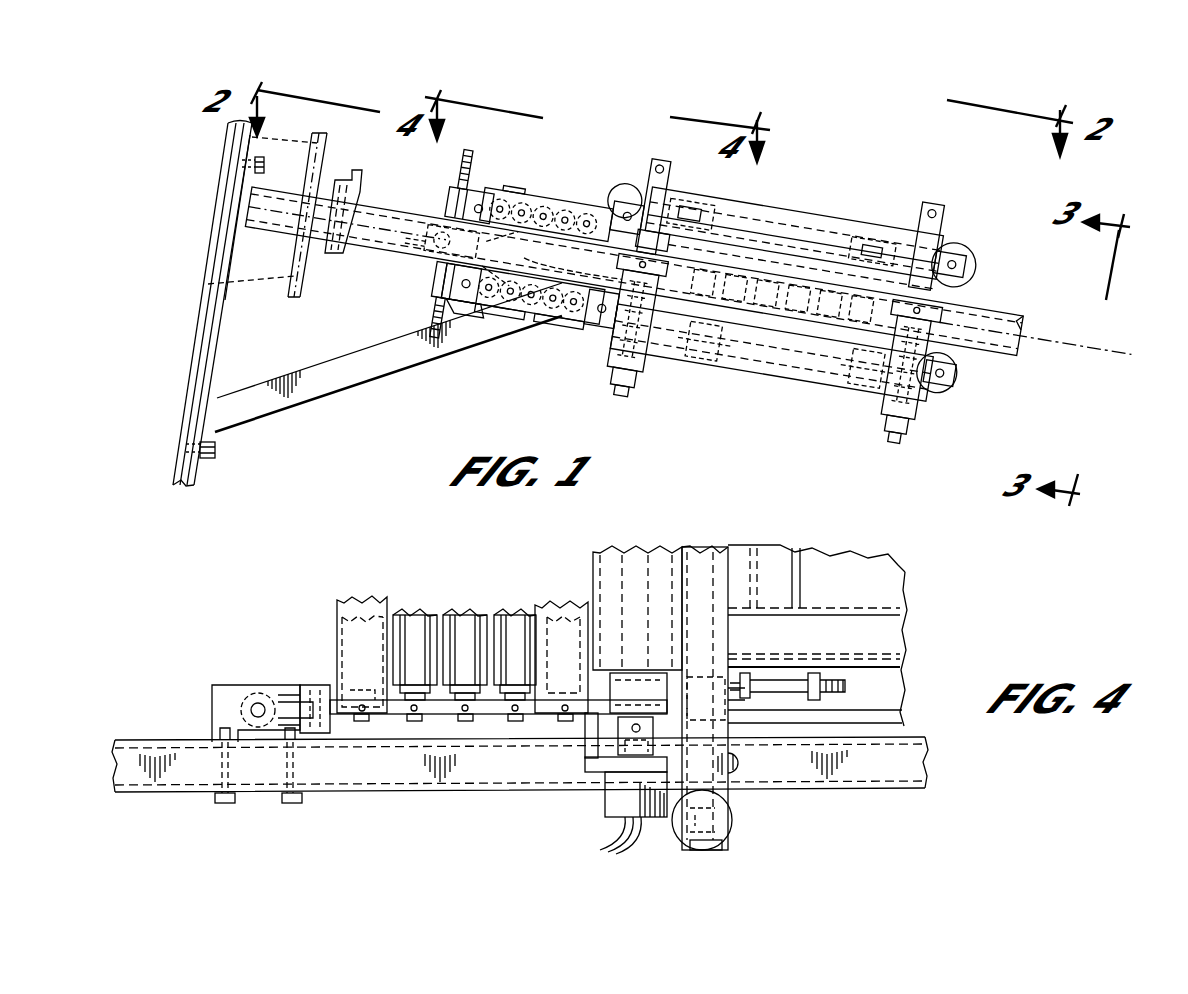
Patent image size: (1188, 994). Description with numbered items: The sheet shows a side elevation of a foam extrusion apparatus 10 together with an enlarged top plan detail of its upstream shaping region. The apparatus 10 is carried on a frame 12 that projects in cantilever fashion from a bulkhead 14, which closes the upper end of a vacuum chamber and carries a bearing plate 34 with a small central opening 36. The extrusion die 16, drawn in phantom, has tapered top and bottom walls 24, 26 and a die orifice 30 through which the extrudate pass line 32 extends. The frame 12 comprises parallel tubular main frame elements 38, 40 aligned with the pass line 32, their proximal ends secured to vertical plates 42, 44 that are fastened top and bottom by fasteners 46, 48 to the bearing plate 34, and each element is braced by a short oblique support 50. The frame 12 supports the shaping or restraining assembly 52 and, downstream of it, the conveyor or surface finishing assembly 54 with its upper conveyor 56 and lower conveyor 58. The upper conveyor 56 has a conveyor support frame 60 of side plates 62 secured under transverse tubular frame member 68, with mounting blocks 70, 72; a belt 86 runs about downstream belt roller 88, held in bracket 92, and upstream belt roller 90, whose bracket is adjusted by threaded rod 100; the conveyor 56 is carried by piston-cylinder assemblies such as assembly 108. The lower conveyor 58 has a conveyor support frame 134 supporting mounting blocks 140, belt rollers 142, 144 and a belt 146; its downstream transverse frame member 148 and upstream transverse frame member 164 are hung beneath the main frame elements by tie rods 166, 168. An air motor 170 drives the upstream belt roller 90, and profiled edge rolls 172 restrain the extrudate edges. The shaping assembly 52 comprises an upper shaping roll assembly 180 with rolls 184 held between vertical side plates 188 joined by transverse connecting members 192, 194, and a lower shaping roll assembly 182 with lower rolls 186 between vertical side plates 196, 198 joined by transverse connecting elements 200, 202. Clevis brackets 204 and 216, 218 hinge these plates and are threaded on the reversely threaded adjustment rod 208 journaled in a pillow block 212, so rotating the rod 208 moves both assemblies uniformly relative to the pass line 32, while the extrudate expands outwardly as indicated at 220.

In FIG. 1, the foam extrusion apparatus 10 is at (203, 187).
In FIG. 1, the frame 12 is at (279, 415).
In FIG. 1, the bulkhead 14 is at (173, 487).
In FIG. 1, the extrusion die 16 is at (355, 262).
In FIG. 1, the top wall 24 is at (352, 200).
In FIG. 1, the bottom wall 26 is at (372, 262).
In FIG. 1, the die orifice 30 is at (518, 250).
In FIG. 1, the extrudate pass line 32 is at (1130, 350).
In FIG. 1, the bearing plate 34 is at (195, 402).
In FIG. 1, the central opening 36 is at (206, 365).
In FIG. 1, the main frame element 38 is at (675, 281).
In FIG. 4, the main frame element 38 is at (382, 780).
In FIG. 1, the main frame element 40 is at (1022, 340).
In FIG. 1, the vertical plate 42 is at (259, 251).
In FIG. 1, the vertical plate 44 is at (220, 368).
In FIG. 1, the fastener 46 is at (266, 162).
In FIG. 1, the fastener 48 is at (216, 452).
In FIG. 1, the oblique support 50 is at (330, 395).
In FIG. 1, the shaping or restraining assembly 52 is at (576, 132).
In FIG. 1, the conveyor or surface finishing assembly 54 is at (817, 172).
In FIG. 1, the upper conveyor 56 is at (990, 262).
In FIG. 1, the lower conveyor 58 is at (978, 372).
In FIG. 1, the conveyor support frame 60 is at (826, 216).
In FIG. 4, the side plate 62 is at (900, 718).
In FIG. 4, the transverse tubular frame member 68 is at (707, 560).
In FIG. 1, the mounting block 70 is at (896, 240).
In FIG. 1, the mounting block 72 is at (710, 215).
In FIG. 4, the mounting block 72 is at (800, 708).
In FIG. 1, the belt 86 is at (952, 255).
In FIG. 1, the downstream belt roller 88 is at (984, 262).
In FIG. 1, the upstream belt roller 90 is at (654, 205).
In FIG. 4, the upstream belt roller 90 is at (612, 558).
In FIG. 1, the bracket 92 is at (976, 276).
In FIG. 4, the threaded rod 100 is at (830, 680).
In FIG. 4, the piston-cylinder assembly 108 is at (735, 830).
In FIG. 1, the conveyor support frame 134 is at (790, 378).
In FIG. 1, the mounting block 140 is at (678, 352).
In FIG. 1, the belt roller 142 is at (960, 384).
In FIG. 1, the belt roller 144 is at (568, 338).
In FIG. 1, the belt 146 is at (938, 396).
In FIG. 1, the downstream transverse frame member 148 is at (890, 428).
In FIG. 1, the upstream transverse frame member 164 is at (640, 366).
In FIG. 1, the tie rod 166 is at (622, 398).
In FIG. 4, the tie rod 166 is at (738, 768).
In FIG. 1, the tie rod 168 is at (622, 395).
In FIG. 4, the air motor 170 is at (618, 806).
In FIG. 1, the profiled edge roll 172 is at (782, 297).
In FIG. 1, the upper shaping roll assembly 180 is at (606, 166).
In FIG. 1, the lower shaping roll assembly 182 is at (536, 372).
In FIG. 1, the rolls 184 is at (540, 200).
In FIG. 4, the rolls 184 is at (460, 624).
In FIG. 1, the lower rolls 186 is at (512, 316).
In FIG. 1, the vertical side plate 188 is at (518, 194).
In FIG. 4, the vertical side plate 188 is at (494, 718).
In FIG. 1, the transverse connecting member 192 is at (600, 210).
In FIG. 4, the transverse connecting member 192 is at (556, 604).
In FIG. 1, the transverse connecting member 194 is at (478, 190).
In FIG. 4, the transverse connecting member 194 is at (352, 607).
In FIG. 1, the vertical side plate 196 is at (471, 342).
In FIG. 1, the vertical side plate 198 is at (500, 335).
In FIG. 4, the vertical side plate 198 is at (660, 685).
In FIG. 1, the transverse connecting element 200 is at (534, 326).
In FIG. 1, the transverse connecting element 202 is at (494, 310).
In FIG. 1, the clevis bracket 204 is at (455, 205).
In FIG. 4, the clevis bracket 204 is at (281, 692).
In FIG. 4, the adjustment rod 208 is at (254, 702).
In FIG. 1, the pillow block 212 is at (429, 236).
In FIG. 4, the pillow block 212 is at (212, 700).
In FIG. 1, the clevis bracket 216 is at (411, 302).
In FIG. 1, the clevis bracket 218 is at (438, 283).
In FIG. 1, the extrudate expansion 220 is at (558, 268).